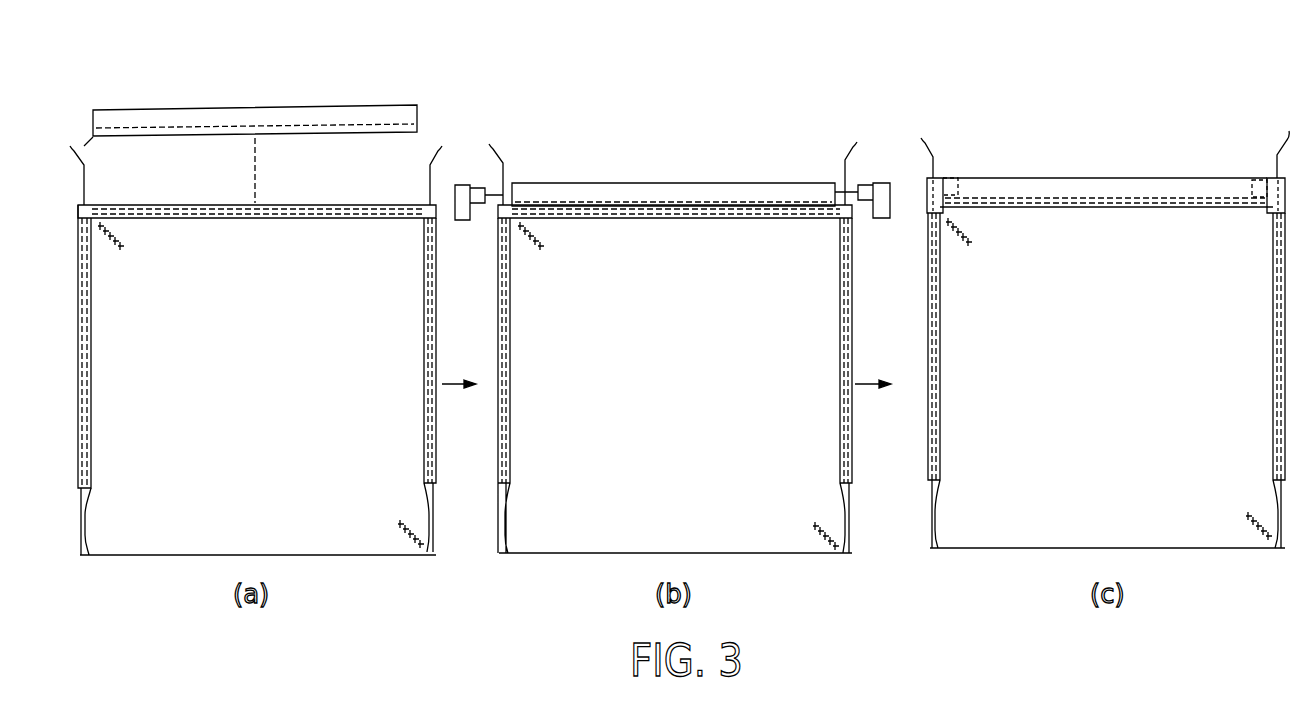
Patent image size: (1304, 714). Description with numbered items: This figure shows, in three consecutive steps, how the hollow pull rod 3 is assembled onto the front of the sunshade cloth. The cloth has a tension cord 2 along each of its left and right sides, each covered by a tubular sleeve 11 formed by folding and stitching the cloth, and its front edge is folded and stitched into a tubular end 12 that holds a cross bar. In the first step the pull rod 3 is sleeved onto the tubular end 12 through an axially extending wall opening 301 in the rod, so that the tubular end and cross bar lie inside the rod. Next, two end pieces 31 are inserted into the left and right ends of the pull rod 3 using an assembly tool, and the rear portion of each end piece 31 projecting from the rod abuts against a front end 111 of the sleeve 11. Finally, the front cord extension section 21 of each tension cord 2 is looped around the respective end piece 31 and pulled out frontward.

The tension cord 2 is at (937, 527).
The pull rod 3 is at (253, 108).
The tubular sleeve 11 is at (497, 314).
The tubular end 12 is at (277, 204).
The front cord extension section 21 is at (936, 172).
The end piece 31 is at (462, 178).
The front end of the sleeve 111 is at (497, 225).
The wall opening 301 is at (84, 146).